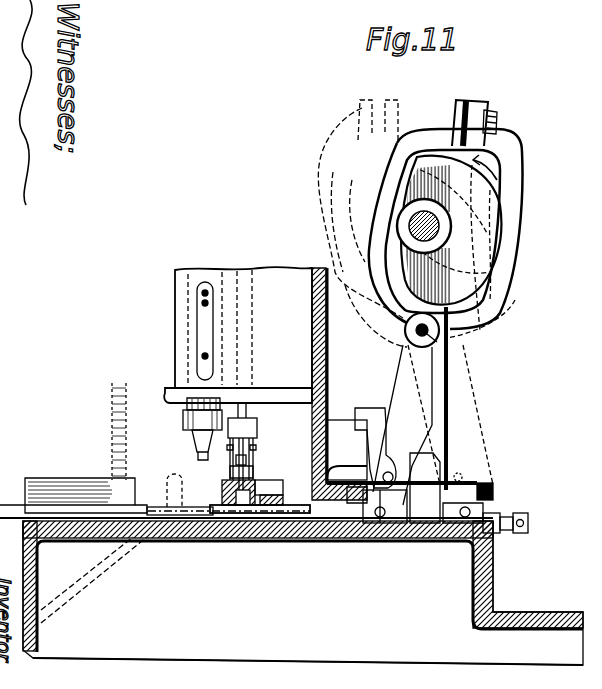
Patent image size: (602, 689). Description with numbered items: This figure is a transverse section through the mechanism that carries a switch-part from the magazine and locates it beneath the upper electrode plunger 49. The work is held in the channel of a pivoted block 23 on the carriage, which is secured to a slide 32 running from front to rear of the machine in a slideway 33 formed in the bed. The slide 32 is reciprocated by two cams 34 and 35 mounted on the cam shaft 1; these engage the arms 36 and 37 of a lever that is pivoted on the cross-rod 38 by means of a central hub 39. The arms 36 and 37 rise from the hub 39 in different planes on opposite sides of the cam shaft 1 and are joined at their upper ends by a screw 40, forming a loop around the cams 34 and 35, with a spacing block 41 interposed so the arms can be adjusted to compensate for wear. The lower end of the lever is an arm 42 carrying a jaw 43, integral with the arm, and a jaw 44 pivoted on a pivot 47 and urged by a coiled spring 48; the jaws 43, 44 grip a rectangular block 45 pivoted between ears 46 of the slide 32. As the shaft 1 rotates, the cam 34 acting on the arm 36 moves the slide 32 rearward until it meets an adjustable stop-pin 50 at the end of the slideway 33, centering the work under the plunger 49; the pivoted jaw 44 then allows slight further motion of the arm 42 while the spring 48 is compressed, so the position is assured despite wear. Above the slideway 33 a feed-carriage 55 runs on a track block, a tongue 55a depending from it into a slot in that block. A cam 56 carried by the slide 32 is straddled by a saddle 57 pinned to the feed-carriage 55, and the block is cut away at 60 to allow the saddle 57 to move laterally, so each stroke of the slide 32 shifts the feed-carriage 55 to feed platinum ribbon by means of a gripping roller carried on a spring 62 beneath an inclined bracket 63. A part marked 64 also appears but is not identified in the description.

The cam shaft 1 is at (440, 222).
The block 23 is at (78, 486).
The slide 32 is at (83, 517).
The slideway 33 is at (445, 541).
The cam 34 is at (487, 195).
The cam 35 is at (487, 238).
The lever arm 36 is at (383, 197).
The lever arm 37 is at (437, 209).
The cross-rod 38 is at (449, 352).
The hub 39 is at (439, 331).
The screw 40 is at (498, 118).
The spacing block 41 is at (468, 108).
The lever arm 42 is at (412, 397).
The jaw 43 is at (428, 540).
The jaw 44 is at (383, 449).
The rectangular block 45 is at (389, 545).
The ears 46 is at (368, 540).
The pivot 47 is at (384, 476).
The coiled spring 48 is at (375, 434).
The upper electrode plunger 49 is at (193, 449).
The adjustable stop-pin 50 is at (530, 504).
The feed-carriage 55 is at (243, 516).
The tongue 55a is at (252, 516).
The cam 56 is at (266, 514).
The saddle 57 is at (240, 517).
The cut-away 60 is at (305, 541).
The spring 62 is at (258, 448).
The inclined bracket 63 is at (229, 478).
The needle 64 is at (262, 476).